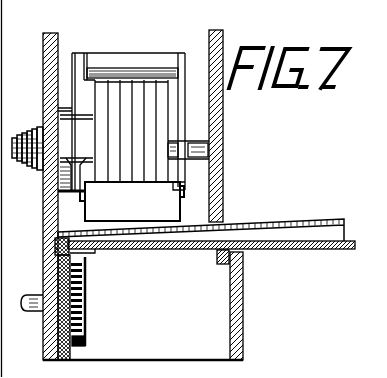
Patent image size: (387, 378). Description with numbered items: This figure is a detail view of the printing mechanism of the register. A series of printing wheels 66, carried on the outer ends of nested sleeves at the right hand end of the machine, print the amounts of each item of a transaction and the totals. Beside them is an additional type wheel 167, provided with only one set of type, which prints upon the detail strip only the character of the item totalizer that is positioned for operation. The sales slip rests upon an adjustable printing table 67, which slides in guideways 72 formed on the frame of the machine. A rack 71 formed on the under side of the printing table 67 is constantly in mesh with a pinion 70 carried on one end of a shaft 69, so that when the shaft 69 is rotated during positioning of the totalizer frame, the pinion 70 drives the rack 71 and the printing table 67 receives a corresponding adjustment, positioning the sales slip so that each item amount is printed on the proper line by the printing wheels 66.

The printing wheels 66 is at (167, 127).
The adjustable printing table 67 is at (299, 223).
The shaft 69 is at (30, 312).
The pinion 70 is at (83, 310).
The rack 71 is at (92, 256).
The guideways 72 is at (83, 263).
The additional type wheel 167 is at (100, 120).